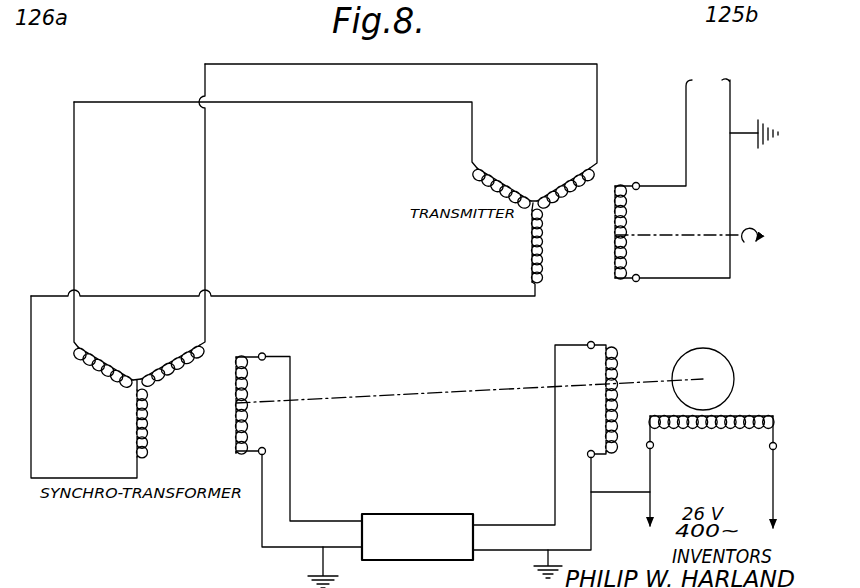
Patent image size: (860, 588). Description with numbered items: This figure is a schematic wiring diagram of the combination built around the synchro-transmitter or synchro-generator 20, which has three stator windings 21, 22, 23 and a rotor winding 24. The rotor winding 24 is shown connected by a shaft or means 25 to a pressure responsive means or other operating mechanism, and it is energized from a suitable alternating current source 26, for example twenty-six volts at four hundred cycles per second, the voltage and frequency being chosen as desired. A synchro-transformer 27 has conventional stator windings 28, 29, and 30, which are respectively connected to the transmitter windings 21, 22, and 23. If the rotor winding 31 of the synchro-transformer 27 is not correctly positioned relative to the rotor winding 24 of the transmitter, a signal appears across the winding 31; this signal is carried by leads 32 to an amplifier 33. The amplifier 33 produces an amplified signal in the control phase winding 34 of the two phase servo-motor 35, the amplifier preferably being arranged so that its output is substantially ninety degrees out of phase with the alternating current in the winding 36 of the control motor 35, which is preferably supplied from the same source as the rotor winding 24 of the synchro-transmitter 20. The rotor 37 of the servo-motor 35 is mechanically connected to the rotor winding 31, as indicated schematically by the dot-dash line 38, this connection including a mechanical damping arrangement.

The synchro-transmitter 20 is at (536, 147).
The stator winding 21 is at (497, 181).
The stator winding 22 is at (581, 182).
The stator winding 23 is at (541, 252).
The rotor winding 24 is at (616, 177).
The shaft 25 is at (652, 233).
The alternating current source 26 is at (709, 173).
The synchro-transformer 27 is at (121, 353).
The stator winding 28 is at (97, 359).
The stator winding 29 is at (164, 362).
The stator winding 30 is at (145, 440).
The rotor winding 31 is at (235, 386).
The leads 32 is at (290, 497).
The amplifier 33 is at (401, 514).
The control phase winding 34 is at (617, 360).
The two phase servo-motor 35 is at (661, 354).
The winding 36 is at (737, 414).
The rotor 37 is at (730, 362).
The dot-dash line 38 is at (399, 396).